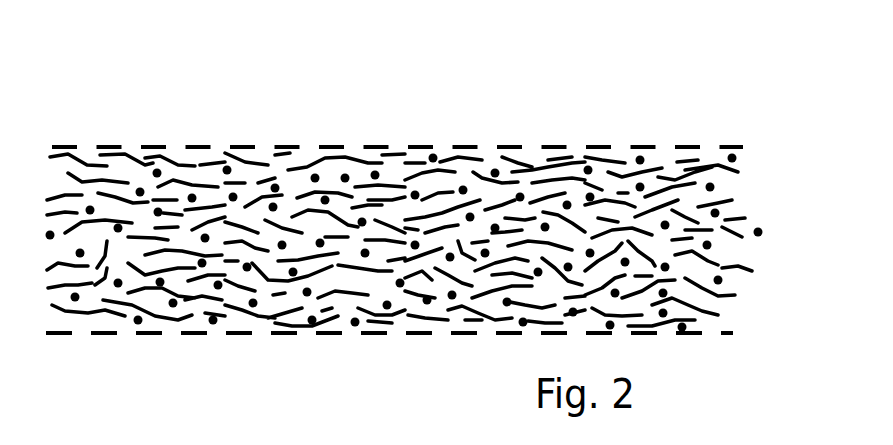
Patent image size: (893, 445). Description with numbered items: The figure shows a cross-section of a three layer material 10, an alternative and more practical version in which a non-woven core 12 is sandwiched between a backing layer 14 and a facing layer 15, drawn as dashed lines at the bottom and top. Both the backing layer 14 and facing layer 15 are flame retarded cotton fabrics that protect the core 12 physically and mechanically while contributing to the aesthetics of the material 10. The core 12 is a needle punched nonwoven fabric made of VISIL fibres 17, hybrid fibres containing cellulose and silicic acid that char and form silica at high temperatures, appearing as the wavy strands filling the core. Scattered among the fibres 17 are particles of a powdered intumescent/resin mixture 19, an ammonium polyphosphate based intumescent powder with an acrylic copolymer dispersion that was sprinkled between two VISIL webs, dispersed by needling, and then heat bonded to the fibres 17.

The three layer material 10 is at (124, 90).
The non-woven core 12 is at (290, 150).
The backing layer 14 is at (370, 338).
The facing layer 15 is at (423, 147).
The VISIL fibres 17 is at (707, 162).
The powdered intumescent/resin mixture 19 is at (761, 230).